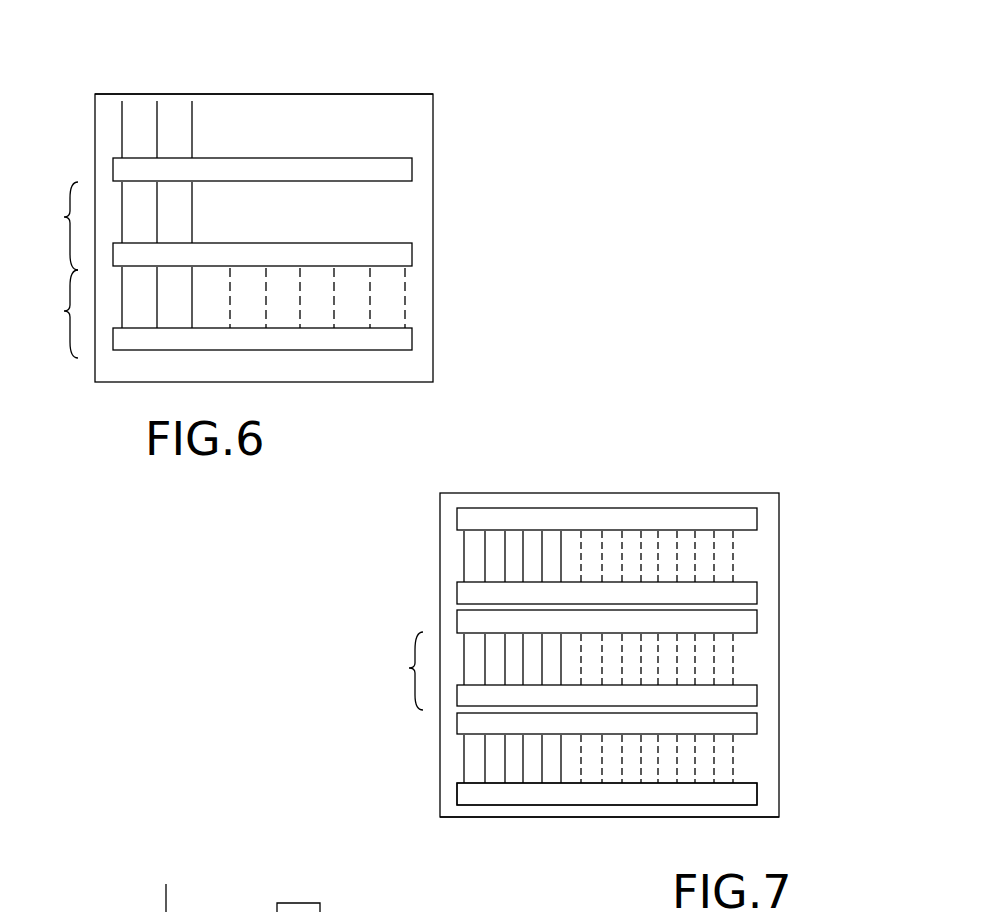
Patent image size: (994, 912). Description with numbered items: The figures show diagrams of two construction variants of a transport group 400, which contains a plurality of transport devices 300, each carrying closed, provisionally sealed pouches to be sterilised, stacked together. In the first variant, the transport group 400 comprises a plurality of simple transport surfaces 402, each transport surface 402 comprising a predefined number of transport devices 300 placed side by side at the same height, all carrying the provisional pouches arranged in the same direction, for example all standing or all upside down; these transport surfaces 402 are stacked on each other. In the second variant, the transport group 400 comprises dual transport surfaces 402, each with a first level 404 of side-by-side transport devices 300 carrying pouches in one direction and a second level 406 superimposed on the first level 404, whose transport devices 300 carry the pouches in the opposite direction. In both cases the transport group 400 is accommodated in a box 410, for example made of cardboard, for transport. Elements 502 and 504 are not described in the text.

In FIG. 6, the transport device 300 is at (422, 170).
In FIG. 7, the transport device 300 is at (451, 593).
In FIG. 6, the transport group 400 is at (532, 178).
In FIG. 7, the transport group 400 is at (692, 474).
In FIG. 6, the transport surface 402 is at (210, 229).
In FIG. 7, the transport surface 402 is at (545, 657).
In FIG. 7, the first level 404 is at (453, 793).
In FIG. 7, the second level 406 is at (766, 718).
In FIG. 6, the box 410 is at (122, 94).
In FIG. 7, the box 410 is at (611, 817).
In FIG. 7, the connector 502 is at (165, 883).
In FIG. 7, the terminal 504 is at (360, 911).